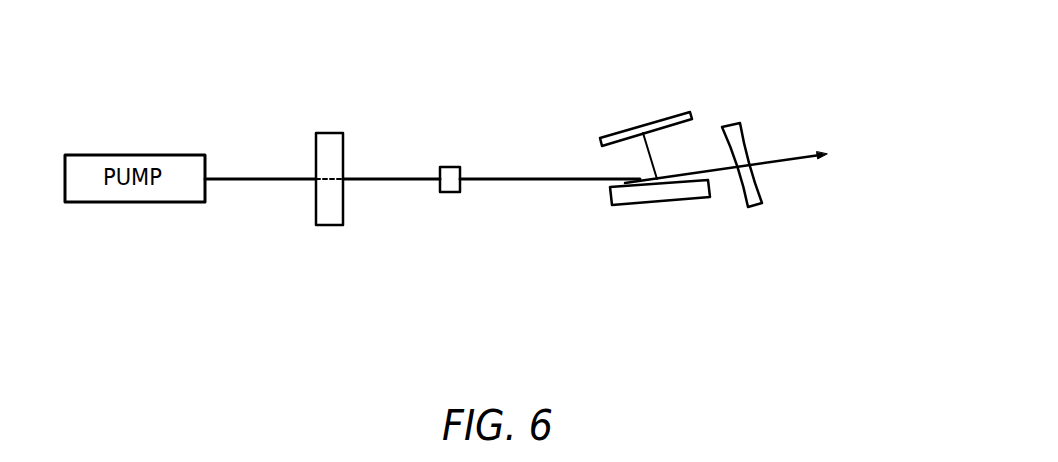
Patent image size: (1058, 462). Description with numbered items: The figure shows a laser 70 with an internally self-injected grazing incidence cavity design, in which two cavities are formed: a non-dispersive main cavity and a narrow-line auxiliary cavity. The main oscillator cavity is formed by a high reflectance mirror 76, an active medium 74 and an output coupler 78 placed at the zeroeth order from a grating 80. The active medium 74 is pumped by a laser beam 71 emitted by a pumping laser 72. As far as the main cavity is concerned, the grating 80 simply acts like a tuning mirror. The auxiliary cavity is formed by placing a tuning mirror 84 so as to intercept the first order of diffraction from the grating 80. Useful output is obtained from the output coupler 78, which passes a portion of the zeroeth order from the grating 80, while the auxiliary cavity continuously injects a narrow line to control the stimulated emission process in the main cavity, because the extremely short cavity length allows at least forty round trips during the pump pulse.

The laser 70 is at (491, 306).
The laser beam 71 is at (258, 183).
The pumping laser 72 is at (780, 165).
The active medium 74 is at (450, 192).
The high reflectance mirror 76 is at (328, 133).
The output coupler 78 is at (748, 207).
The grating 80 is at (610, 198).
The tuning mirror 84 is at (600, 142).